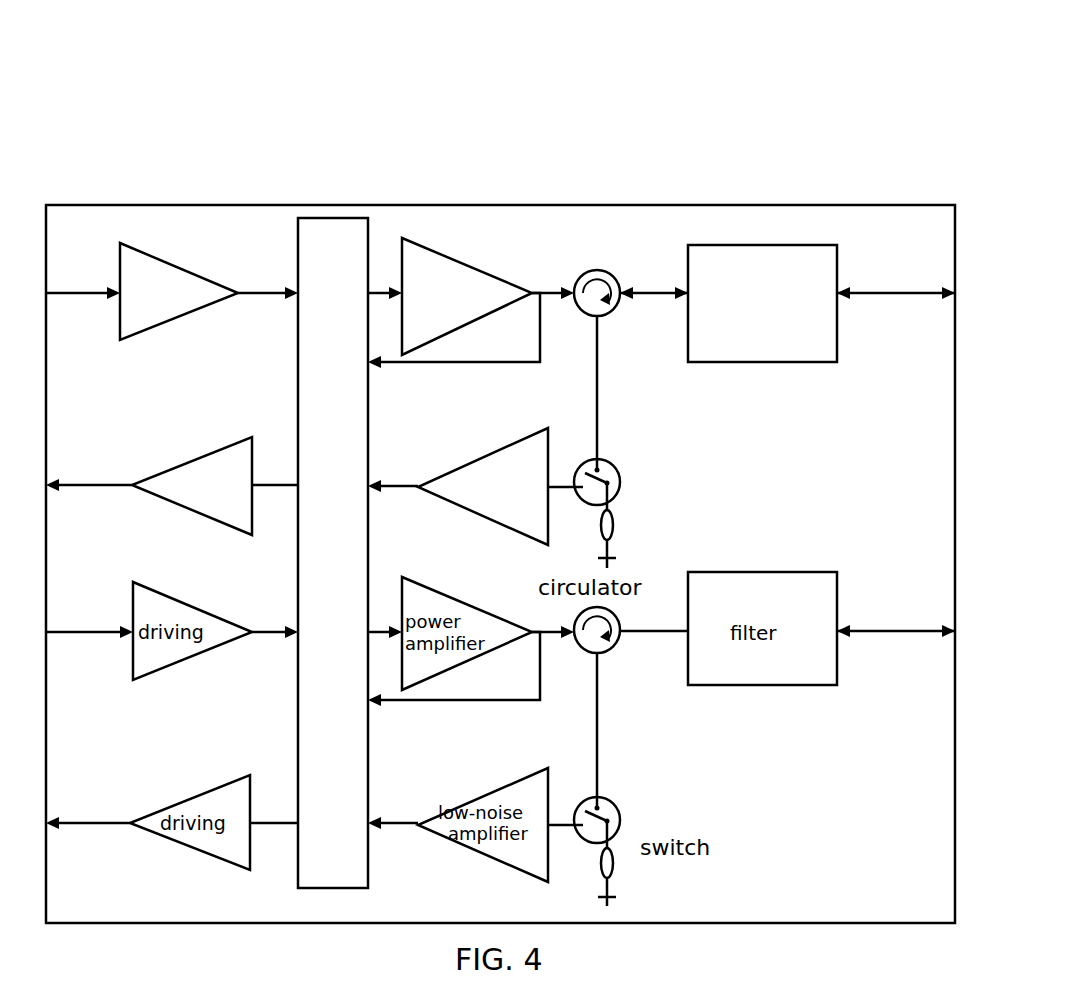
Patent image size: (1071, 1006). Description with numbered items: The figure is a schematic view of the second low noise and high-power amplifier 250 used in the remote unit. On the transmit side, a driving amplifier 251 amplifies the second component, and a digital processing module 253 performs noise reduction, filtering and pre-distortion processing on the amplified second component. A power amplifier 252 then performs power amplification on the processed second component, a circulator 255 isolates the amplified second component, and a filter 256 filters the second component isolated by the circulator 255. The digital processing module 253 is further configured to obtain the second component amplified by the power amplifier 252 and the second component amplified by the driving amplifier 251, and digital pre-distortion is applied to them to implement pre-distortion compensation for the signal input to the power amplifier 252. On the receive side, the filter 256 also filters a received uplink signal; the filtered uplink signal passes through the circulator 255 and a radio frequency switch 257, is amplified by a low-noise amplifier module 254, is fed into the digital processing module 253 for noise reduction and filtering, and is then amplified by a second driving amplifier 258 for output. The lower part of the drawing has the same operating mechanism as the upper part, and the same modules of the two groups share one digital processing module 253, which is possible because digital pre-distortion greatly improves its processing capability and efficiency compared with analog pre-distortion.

The second low noise and high-power amplifier 250 is at (599, 148).
The driving amplifier 251 is at (150, 257).
The power amplifier 252 is at (433, 257).
The digital processing module 253 is at (330, 262).
The low-noise amplifier module 254 is at (550, 470).
The circulator 255 is at (608, 282).
The filter 256 is at (793, 277).
The radio frequency switch 257 is at (605, 475).
The second driving amplifier 258 is at (205, 472).